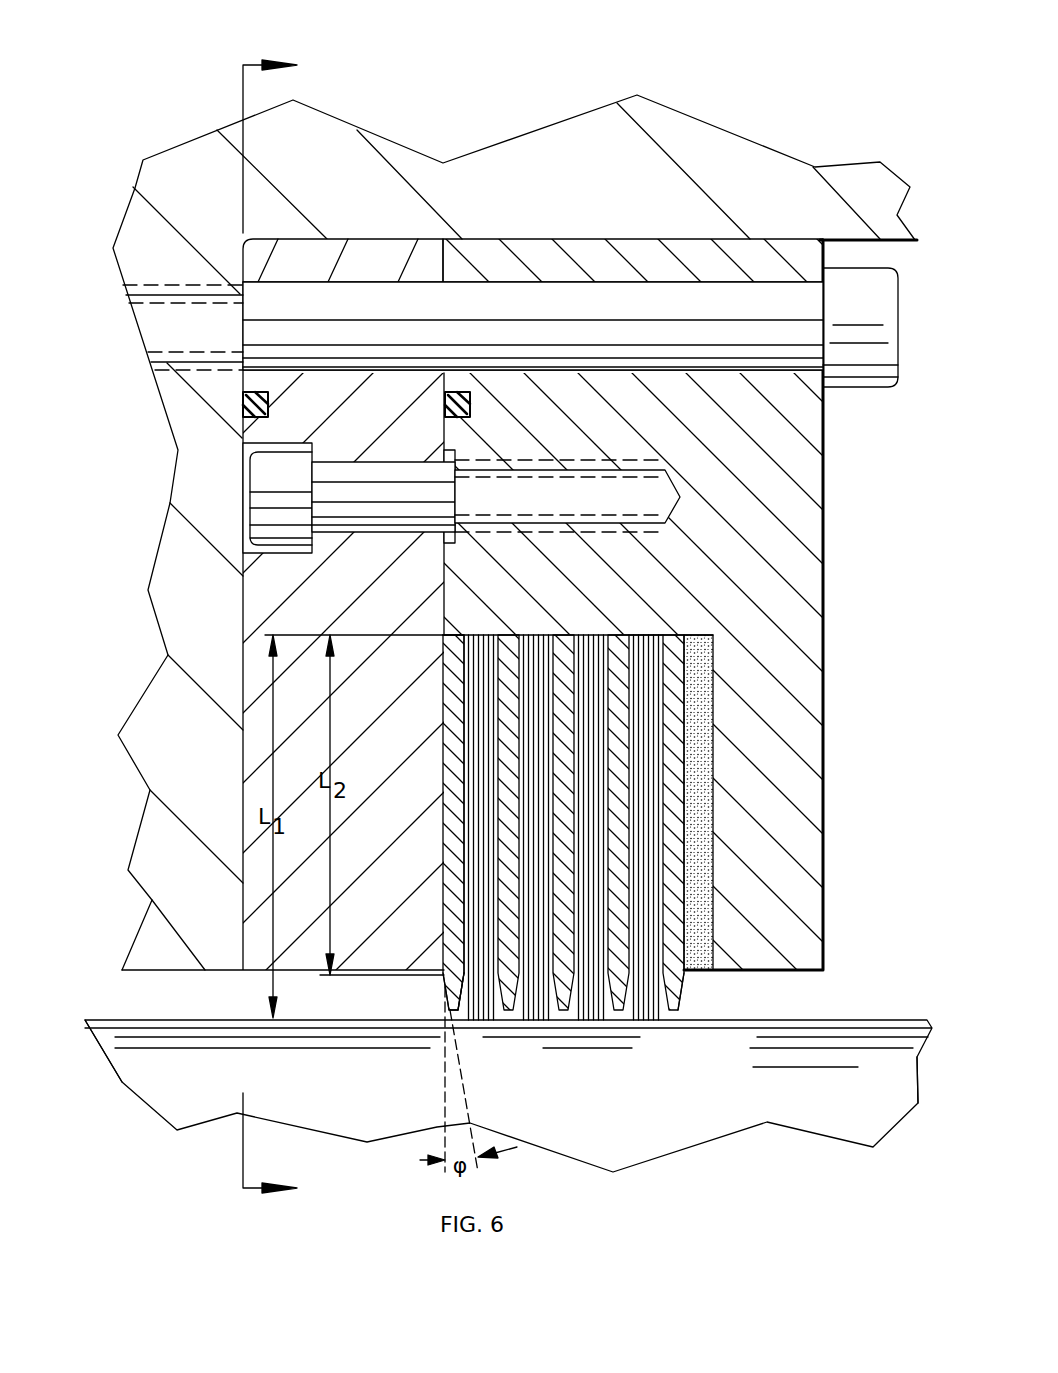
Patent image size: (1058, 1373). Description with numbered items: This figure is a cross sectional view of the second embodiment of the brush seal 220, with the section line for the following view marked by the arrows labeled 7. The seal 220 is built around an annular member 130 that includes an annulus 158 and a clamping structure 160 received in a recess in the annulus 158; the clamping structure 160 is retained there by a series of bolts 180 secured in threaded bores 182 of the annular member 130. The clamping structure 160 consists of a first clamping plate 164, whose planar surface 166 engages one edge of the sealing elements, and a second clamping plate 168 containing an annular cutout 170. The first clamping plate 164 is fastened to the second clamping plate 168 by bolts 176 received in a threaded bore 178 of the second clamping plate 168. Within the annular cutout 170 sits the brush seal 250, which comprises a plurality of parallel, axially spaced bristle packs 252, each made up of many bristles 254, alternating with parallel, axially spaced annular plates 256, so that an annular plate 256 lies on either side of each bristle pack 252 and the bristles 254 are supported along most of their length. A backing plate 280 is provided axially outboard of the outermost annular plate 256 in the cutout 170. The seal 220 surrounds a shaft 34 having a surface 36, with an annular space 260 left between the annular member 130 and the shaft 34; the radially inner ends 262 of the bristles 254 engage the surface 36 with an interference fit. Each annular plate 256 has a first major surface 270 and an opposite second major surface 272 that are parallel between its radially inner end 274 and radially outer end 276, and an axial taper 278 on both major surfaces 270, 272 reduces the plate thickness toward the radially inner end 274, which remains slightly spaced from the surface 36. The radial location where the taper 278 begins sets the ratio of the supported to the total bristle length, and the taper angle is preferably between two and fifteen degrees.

The annulus 158 is at (662, 120).
The annular member 130 is at (812, 128).
The bolt 180 is at (370, 303).
The threaded bore 182 is at (170, 295).
The bolt 176 is at (268, 472).
The threaded bore 178 is at (525, 477).
The clamping structure 160 is at (846, 467).
The brush seal 220 is at (856, 543).
The second clamping plate 168 is at (801, 571).
The first clamping plate 164 is at (250, 600).
The radially outer end 276 is at (460, 642).
The bristle pack 252 is at (465, 630).
The brush seal 250 is at (598, 620).
The annular cutout 170 is at (620, 645).
The bristle 254 is at (650, 692).
The annular plate 256 is at (683, 735).
The second major surface 272 is at (660, 760).
The backing plate 280 is at (700, 878).
The planar surface 166 is at (447, 660).
The first major surface 270 is at (457, 730).
The axial taper 278 is at (450, 995).
The radially inner end 274 is at (450, 1013).
The radially inner end 262 is at (650, 1027).
The annular space 260 is at (192, 1000).
The surface 36 is at (560, 1097).
The shaft 34 is at (877, 1103).
The section line 7- 7 is at (257, 616).